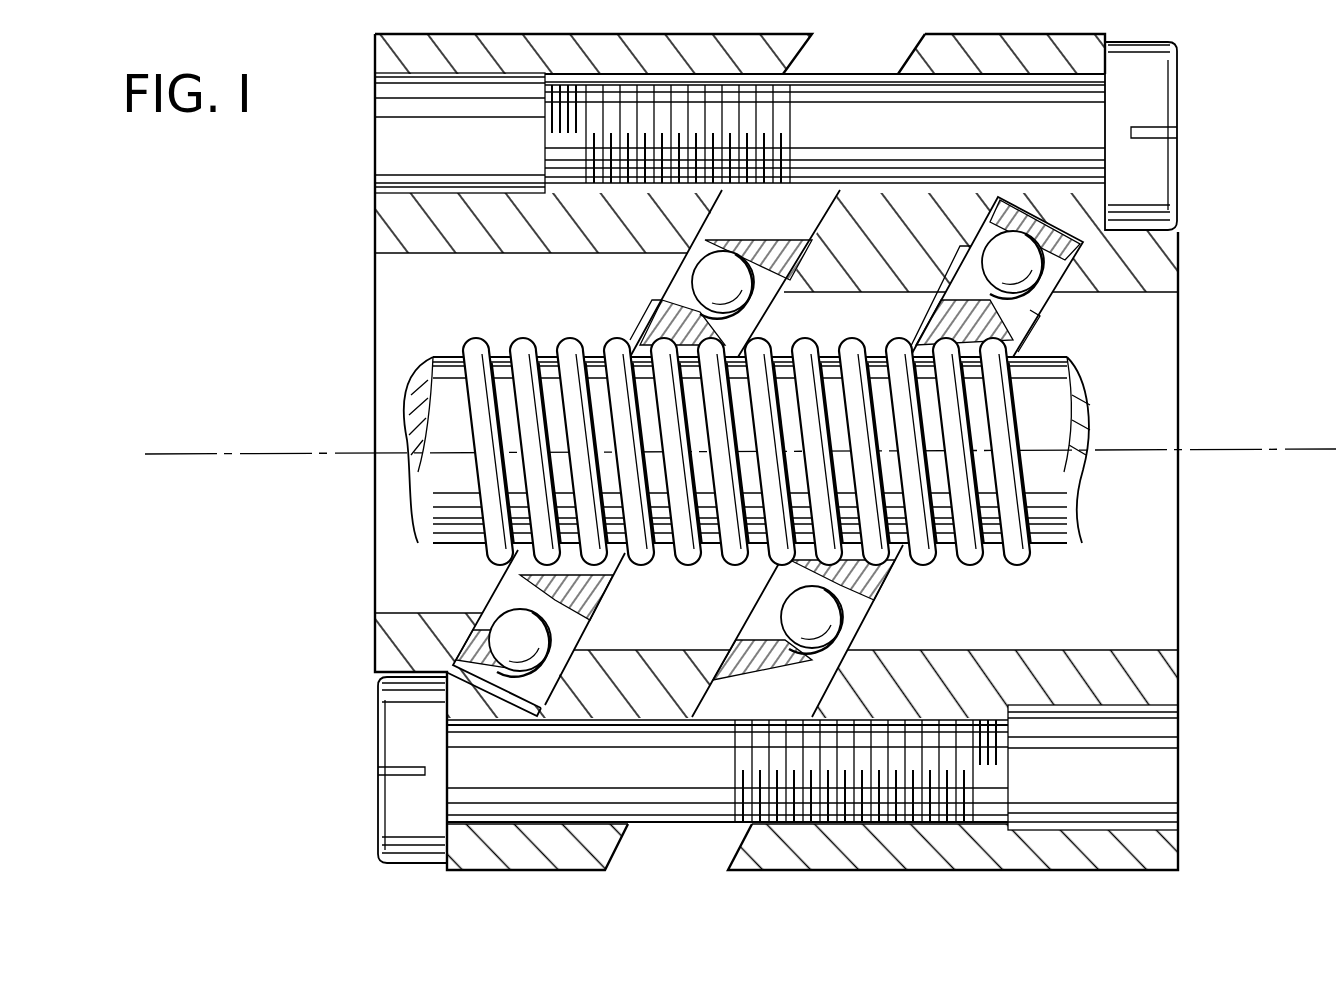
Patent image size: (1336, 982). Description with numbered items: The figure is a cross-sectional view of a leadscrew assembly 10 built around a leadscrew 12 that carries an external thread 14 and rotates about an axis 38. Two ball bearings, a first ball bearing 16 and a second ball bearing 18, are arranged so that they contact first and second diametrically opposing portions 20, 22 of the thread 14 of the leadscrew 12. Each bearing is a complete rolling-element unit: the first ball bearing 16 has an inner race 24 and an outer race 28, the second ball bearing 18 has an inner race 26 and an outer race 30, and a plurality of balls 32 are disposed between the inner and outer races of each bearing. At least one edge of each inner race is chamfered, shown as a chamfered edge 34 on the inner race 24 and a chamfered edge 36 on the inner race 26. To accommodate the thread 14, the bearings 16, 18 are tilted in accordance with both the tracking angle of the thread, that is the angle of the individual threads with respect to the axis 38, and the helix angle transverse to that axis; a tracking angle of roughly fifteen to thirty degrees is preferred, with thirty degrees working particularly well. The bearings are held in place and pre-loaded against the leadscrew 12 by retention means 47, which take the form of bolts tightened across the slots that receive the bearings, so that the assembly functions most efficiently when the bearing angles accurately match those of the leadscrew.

The leadscrew assembly 10 is at (1220, 191).
The leadscrew 12 is at (452, 525).
The external thread 14 is at (522, 348).
The first ball bearing 16 is at (538, 688).
The second ball bearing 18 is at (800, 658).
The first portion of the thread 20 is at (764, 345).
The second portion of the thread 22 is at (778, 553).
The inner race 24 is at (573, 620).
The inner race 26 is at (985, 298).
The outer race 28 is at (780, 258).
The outer race 30 is at (1056, 250).
The balls 32 is at (722, 268).
The chamfered edge 34 is at (660, 310).
The chamfered edge 36 is at (1018, 322).
The axis of rotation 38 is at (287, 453).
The retention means 47 is at (1157, 80).